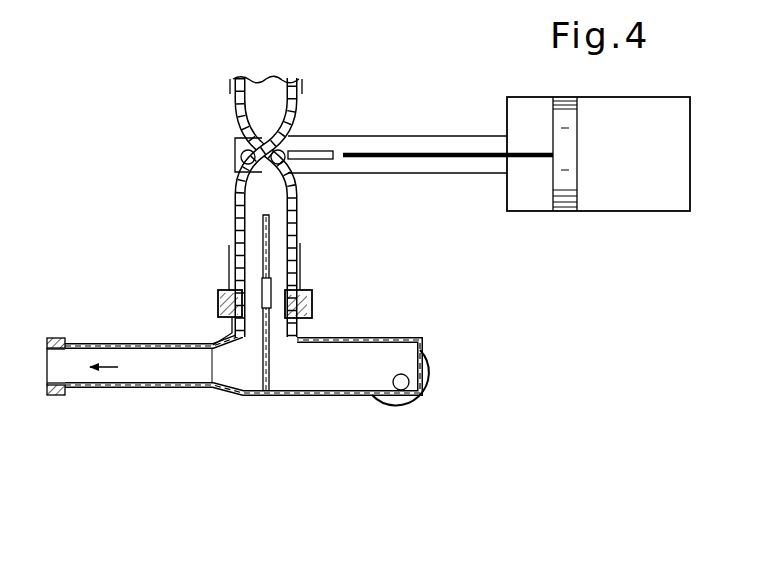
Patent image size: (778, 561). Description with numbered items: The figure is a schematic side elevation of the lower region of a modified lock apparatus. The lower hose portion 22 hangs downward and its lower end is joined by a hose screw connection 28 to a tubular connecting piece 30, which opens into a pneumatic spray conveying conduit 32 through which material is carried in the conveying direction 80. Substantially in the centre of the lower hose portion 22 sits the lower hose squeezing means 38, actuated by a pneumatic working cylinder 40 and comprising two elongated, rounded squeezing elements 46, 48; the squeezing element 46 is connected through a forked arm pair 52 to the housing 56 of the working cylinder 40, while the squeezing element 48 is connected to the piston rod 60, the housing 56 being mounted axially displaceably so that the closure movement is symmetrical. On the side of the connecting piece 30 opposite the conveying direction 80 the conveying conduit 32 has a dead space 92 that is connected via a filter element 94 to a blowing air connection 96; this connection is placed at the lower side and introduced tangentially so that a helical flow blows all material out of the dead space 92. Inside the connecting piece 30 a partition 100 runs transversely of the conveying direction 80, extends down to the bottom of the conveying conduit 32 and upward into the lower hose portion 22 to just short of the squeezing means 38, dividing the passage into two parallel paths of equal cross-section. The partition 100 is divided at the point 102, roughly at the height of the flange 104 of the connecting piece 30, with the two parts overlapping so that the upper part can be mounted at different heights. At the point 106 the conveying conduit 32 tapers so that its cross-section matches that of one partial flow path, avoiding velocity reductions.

The lower hose portion 22 is at (238, 186).
The hose screw connection 28 is at (228, 262).
The tubular connecting piece 30 is at (234, 331).
The pneumatic spray conveying conduit 32 is at (137, 390).
The lower hose squeezing means 38 is at (224, 132).
The pneumatic working cylinder 40 is at (652, 222).
The squeezing element 46 is at (241, 157).
The squeezing element 48 is at (284, 163).
The forked arm pair 52 is at (463, 176).
The housing 56 is at (532, 193).
The piston rod 60 is at (397, 160).
The conveying direction 80 is at (118, 364).
The dead space 92 is at (342, 370).
The filter element 94 is at (427, 408).
The blowing air connection 96 is at (402, 390).
The partition 100 is at (263, 367).
The division point 102 is at (269, 300).
The flange 104 is at (300, 307).
The tapering point 106 is at (225, 394).